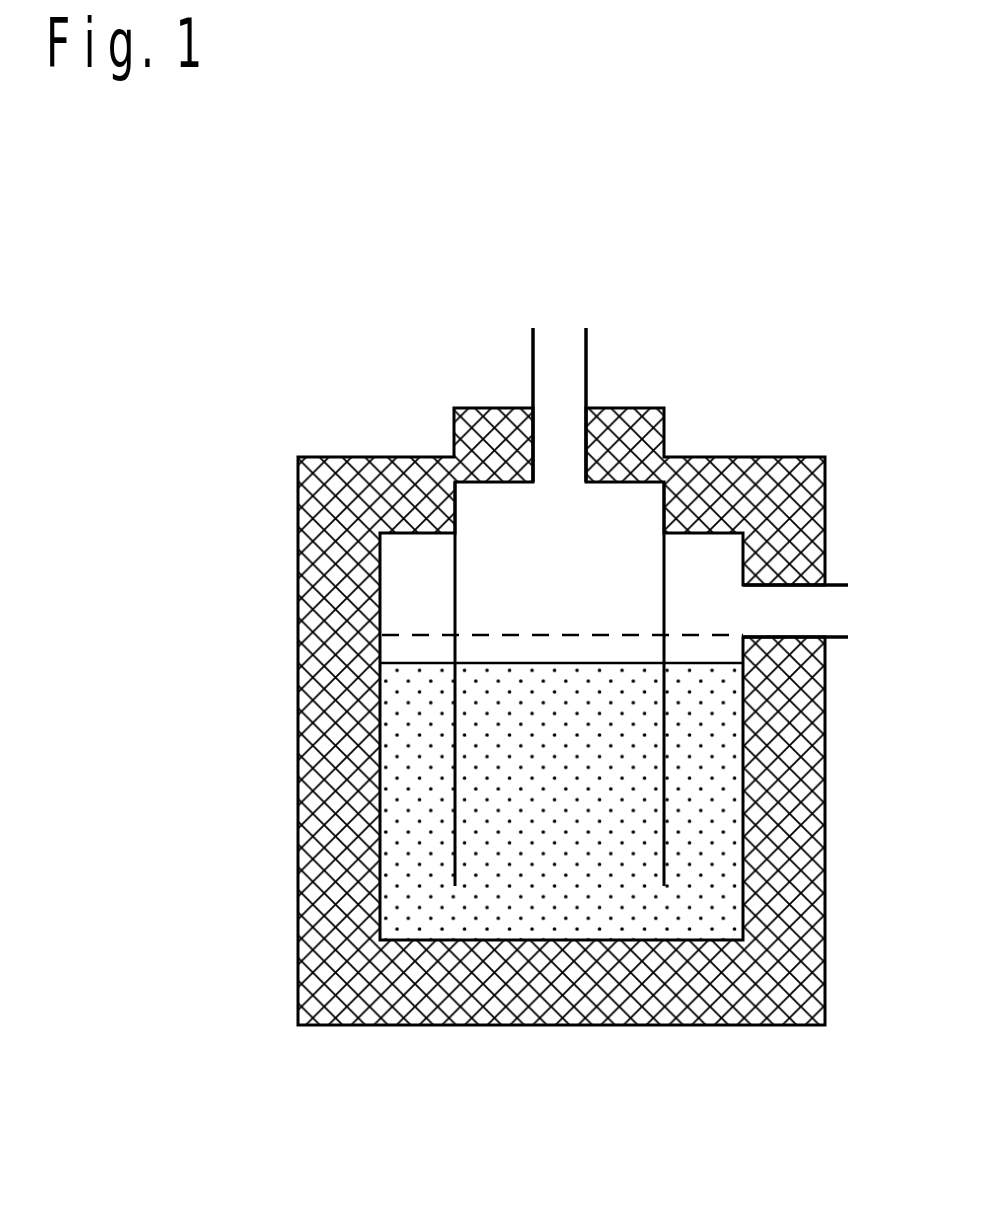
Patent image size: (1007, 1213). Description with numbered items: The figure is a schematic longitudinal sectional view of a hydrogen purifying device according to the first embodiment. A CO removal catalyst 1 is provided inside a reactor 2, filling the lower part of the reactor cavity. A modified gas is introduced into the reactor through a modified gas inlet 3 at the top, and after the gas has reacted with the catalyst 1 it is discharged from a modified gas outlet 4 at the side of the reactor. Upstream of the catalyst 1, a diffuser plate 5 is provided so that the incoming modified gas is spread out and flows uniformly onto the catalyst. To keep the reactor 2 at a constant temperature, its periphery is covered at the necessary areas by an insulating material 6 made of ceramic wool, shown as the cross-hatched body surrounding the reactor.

The CO removal catalyst 1 is at (410, 712).
The reactor 2 is at (377, 795).
The modified gas inlet 3 is at (558, 383).
The modified gas outlet 4 is at (797, 610).
The diffuser plate 5 is at (540, 631).
The insulating material 6 is at (780, 855).